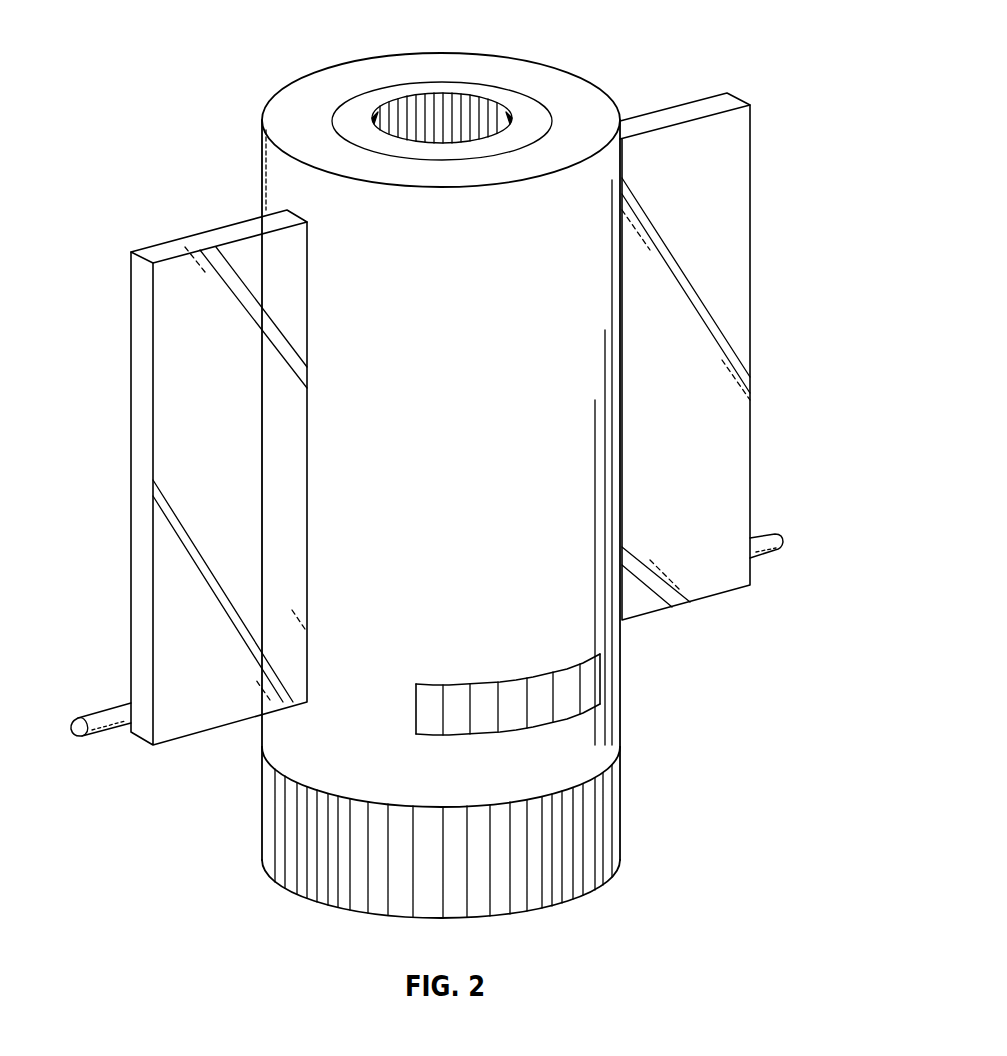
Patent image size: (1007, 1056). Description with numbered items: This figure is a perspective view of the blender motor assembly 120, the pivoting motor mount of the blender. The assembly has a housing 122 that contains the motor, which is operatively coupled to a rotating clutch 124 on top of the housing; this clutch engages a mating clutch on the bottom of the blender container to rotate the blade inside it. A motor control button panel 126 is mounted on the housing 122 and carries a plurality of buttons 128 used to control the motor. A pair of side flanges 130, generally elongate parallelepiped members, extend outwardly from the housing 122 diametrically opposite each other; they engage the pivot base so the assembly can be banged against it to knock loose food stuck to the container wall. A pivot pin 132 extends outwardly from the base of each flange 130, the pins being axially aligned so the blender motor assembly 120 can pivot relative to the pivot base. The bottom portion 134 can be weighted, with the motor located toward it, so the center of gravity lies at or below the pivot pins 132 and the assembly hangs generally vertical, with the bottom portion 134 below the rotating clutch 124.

The blender motor assembly 120 is at (197, 59).
The housing 122 is at (597, 92).
The rotating clutch 124 is at (381, 100).
The motor control button panel 126 is at (600, 680).
The buttons 128 is at (458, 687).
The side flanges 130 is at (750, 173).
The pivot pin 132 is at (108, 703).
The bottom portion 134 is at (603, 883).